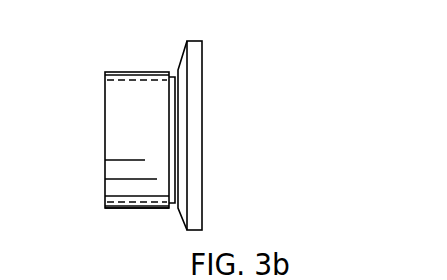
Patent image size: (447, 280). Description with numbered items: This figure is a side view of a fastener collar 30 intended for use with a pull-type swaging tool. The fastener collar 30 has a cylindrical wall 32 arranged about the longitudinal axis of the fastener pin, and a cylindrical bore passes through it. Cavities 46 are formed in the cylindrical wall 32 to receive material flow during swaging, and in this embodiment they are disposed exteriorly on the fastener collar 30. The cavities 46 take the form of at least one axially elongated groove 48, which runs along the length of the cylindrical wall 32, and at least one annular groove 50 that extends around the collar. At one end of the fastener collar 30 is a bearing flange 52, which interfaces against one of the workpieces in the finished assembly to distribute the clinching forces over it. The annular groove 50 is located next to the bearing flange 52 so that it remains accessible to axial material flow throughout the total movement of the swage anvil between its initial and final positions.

The fastener collar 30 is at (148, 139).
The cylindrical wall 32 is at (138, 208).
The cavities 46 is at (94, 116).
The axially elongated groove 48 is at (128, 72).
The annular groove 50 is at (177, 207).
The bearing flange 52 is at (192, 58).